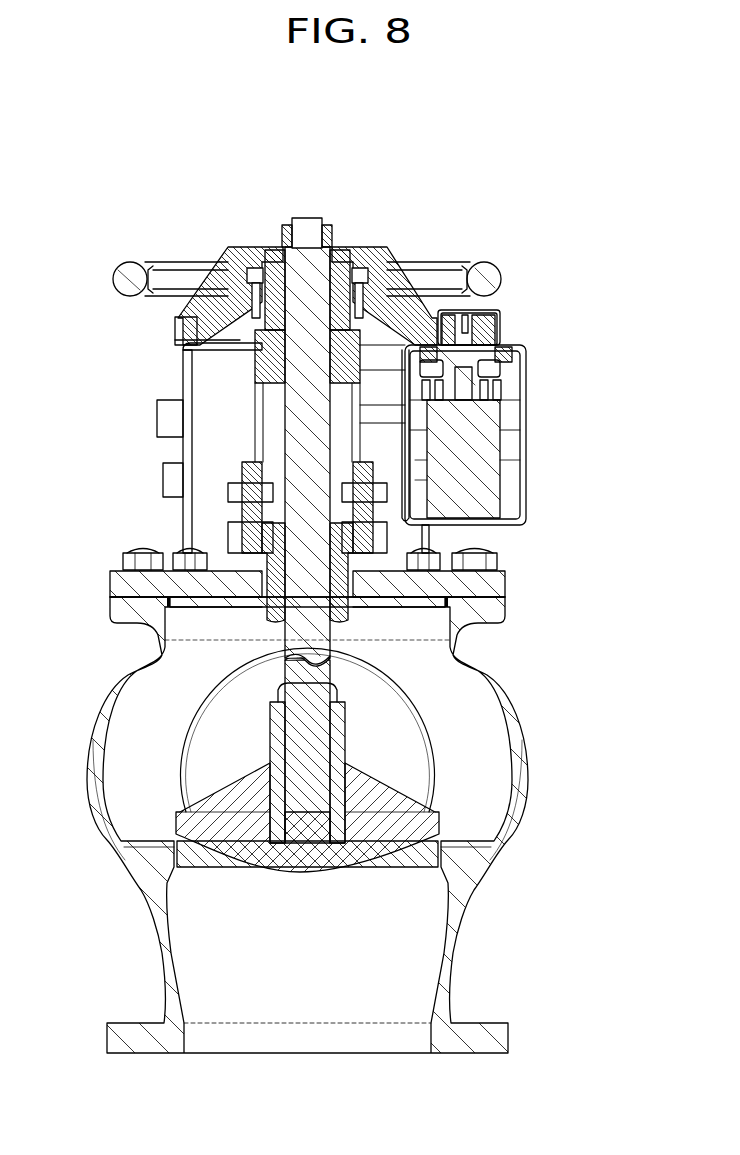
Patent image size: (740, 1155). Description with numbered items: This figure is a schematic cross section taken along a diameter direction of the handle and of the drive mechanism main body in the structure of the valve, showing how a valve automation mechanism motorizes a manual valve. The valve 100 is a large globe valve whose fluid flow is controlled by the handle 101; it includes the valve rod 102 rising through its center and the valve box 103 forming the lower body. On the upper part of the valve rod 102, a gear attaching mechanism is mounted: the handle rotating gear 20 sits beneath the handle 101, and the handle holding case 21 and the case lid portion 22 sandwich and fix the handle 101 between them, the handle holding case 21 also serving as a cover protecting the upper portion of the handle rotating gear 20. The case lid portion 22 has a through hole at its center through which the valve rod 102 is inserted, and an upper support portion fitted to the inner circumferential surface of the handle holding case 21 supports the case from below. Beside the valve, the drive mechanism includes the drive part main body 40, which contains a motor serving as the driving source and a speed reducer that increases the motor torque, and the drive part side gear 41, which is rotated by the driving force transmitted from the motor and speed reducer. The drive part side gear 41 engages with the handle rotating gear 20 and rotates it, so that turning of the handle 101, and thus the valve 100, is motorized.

The manual valve 100 is at (344, 635).
The handle 101 is at (140, 268).
The valve rod 102 is at (303, 440).
The valve box 103 is at (527, 768).
The handle rotating gear 20 is at (175, 318).
The handle holding case 21 is at (210, 262).
The case lid portion 22 is at (245, 247).
The drive part main body 40 is at (523, 440).
The drive part side gear 41 is at (500, 332).